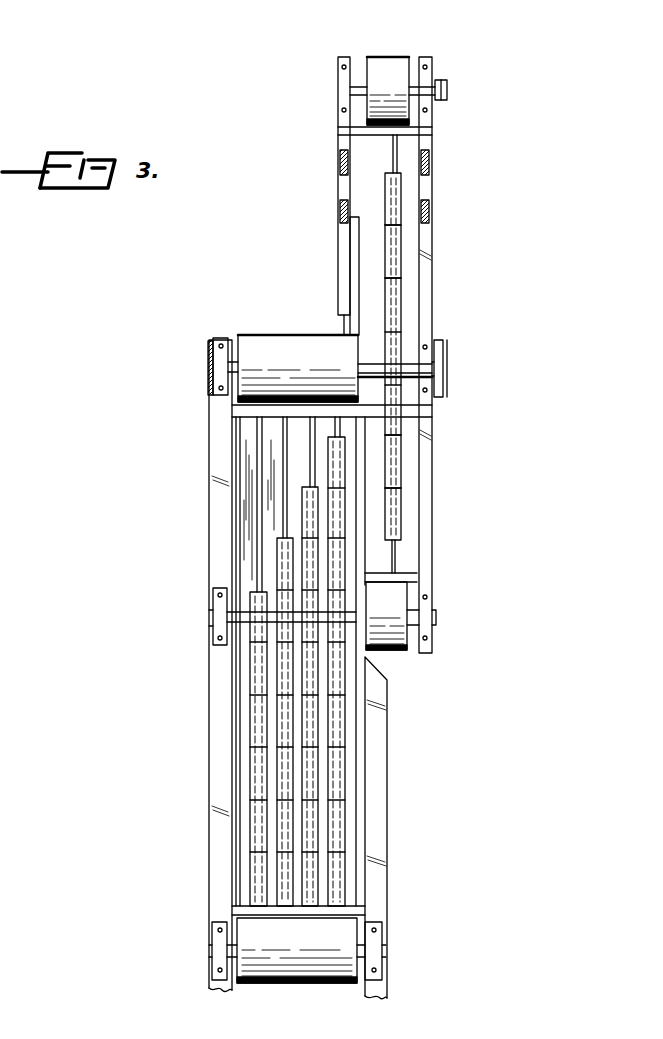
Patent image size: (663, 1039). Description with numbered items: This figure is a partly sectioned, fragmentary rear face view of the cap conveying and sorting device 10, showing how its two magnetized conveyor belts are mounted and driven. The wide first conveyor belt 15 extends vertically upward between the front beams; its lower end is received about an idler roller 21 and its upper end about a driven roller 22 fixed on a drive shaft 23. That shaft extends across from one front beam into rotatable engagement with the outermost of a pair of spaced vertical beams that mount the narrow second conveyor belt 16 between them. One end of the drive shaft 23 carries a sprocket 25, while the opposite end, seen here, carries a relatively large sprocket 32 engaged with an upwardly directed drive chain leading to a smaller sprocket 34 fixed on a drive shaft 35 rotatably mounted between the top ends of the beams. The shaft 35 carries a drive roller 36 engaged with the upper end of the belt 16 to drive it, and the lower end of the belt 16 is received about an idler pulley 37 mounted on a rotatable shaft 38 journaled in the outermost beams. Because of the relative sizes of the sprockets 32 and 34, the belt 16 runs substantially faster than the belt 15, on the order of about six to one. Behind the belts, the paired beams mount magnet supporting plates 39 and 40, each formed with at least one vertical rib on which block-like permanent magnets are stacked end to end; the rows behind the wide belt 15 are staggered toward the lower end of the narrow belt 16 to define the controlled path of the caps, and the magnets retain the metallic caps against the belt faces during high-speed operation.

The cap conveying and sorting device 10 is at (470, 108).
The first magnetized conveyor belt 15 is at (292, 335).
The second magnetized conveyor belt 16 is at (378, 57).
The idler roller 21 is at (272, 963).
The driven roller 22 is at (257, 348).
The drive shaft 23 is at (410, 358).
The sprocket 25 is at (215, 352).
The large sprocket 32 is at (447, 379).
The small sprocket 34 is at (447, 88).
The drive shaft 35 is at (356, 90).
The drive roller 36 is at (395, 70).
The idler pulley 37 is at (398, 648).
The rotatable shaft 38 is at (240, 612).
The magnet supporting plate 39 is at (248, 480).
The magnet supporting plate 40 is at (407, 200).